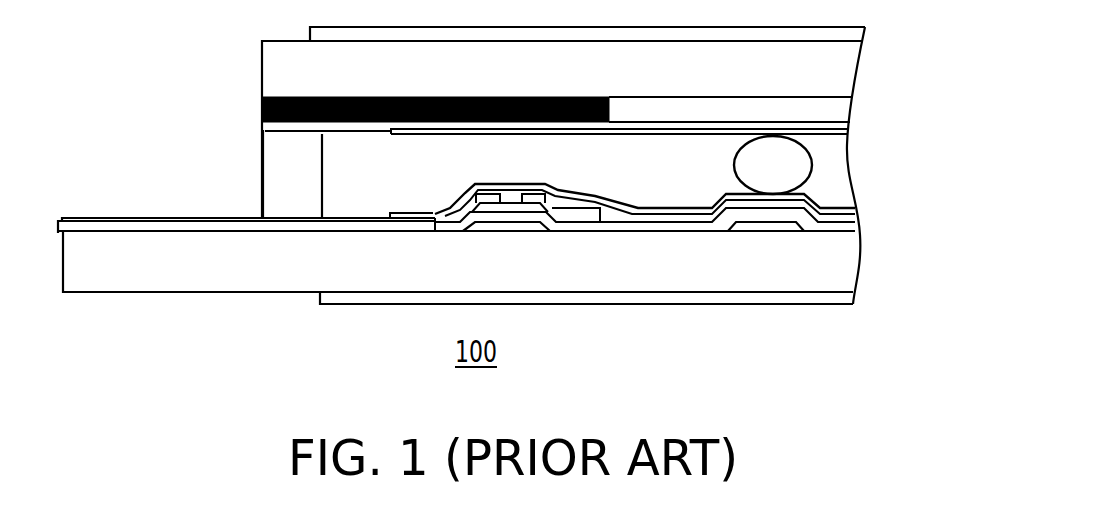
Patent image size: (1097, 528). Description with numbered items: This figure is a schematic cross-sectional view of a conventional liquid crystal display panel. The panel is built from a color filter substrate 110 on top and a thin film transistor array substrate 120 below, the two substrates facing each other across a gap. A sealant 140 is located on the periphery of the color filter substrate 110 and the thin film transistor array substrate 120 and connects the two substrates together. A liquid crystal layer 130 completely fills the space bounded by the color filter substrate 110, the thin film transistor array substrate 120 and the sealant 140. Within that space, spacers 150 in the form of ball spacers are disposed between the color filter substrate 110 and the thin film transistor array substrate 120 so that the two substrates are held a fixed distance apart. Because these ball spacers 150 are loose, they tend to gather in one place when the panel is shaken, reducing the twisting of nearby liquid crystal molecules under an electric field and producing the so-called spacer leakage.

The color filter substrate 110 is at (825, 68).
The thin film transistor array substrate 120 is at (827, 260).
The liquid crystal layer 130 is at (827, 193).
The sealant 140 is at (285, 170).
The spacers 150 is at (785, 153).